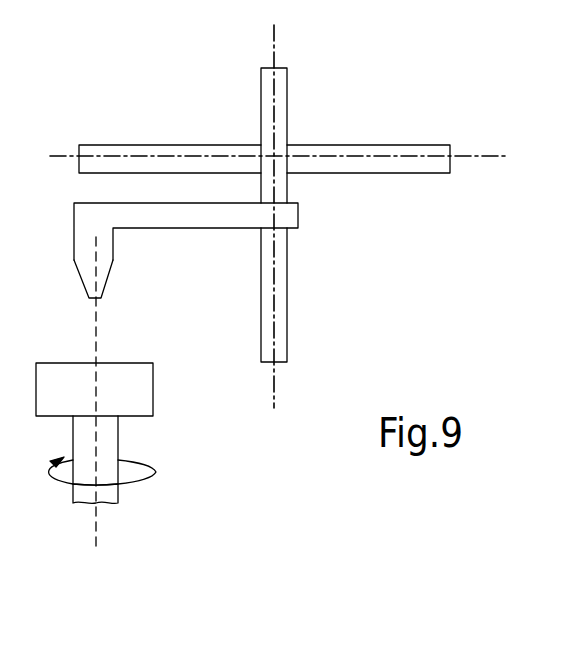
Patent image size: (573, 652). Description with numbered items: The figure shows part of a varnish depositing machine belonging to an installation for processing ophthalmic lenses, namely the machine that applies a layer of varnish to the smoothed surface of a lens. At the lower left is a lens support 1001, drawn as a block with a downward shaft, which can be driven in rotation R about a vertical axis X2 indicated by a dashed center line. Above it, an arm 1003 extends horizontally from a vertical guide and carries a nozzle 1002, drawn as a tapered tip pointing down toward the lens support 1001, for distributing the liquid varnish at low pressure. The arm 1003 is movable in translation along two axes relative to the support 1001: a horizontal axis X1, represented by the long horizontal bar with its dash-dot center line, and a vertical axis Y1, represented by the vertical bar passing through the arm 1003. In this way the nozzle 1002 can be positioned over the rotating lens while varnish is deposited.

The lens support 1001 is at (130, 392).
The nozzle 1002 is at (103, 266).
The arm 1003 is at (195, 215).
The horizontal axis X1 is at (488, 157).
The vertical axis Y1 is at (275, 50).
The vertical axis X2 is at (97, 547).
The rotation R is at (157, 475).